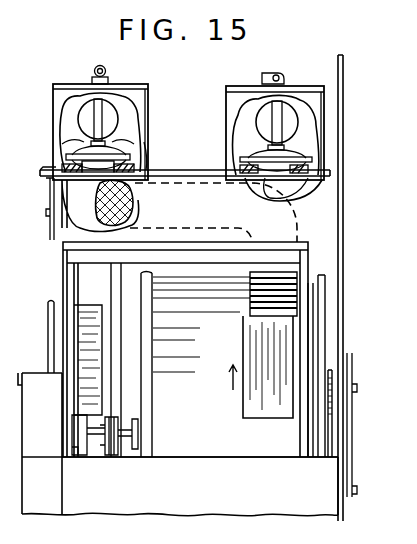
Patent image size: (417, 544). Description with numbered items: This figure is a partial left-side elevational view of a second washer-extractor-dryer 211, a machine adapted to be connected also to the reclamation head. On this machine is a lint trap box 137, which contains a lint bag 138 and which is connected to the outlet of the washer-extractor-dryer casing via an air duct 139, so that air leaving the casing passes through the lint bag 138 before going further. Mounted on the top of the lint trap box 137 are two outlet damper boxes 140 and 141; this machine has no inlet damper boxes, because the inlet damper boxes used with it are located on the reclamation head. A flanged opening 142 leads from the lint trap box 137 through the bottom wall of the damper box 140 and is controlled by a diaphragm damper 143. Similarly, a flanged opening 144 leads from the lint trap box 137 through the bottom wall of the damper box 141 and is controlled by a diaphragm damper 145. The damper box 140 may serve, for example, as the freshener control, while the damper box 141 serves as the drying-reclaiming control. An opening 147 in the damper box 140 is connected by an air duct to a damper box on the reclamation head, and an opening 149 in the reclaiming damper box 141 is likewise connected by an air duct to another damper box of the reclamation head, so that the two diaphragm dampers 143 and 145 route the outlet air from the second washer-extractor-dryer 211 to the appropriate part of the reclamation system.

The lint trap box 137 is at (66, 243).
The lint bag 138 is at (97, 195).
The air duct 139 is at (252, 302).
The outlet damper box 140 is at (60, 103).
The outlet damper box 141 is at (235, 104).
The flanged opening 142 is at (62, 146).
The diaphragm damper 143 is at (144, 142).
The flanged opening 144 is at (292, 197).
The diaphragm damper 145 is at (290, 152).
The opening 147 is at (113, 118).
The opening 149 is at (285, 118).
The second washer-extractor-dryer 211 is at (85, 517).